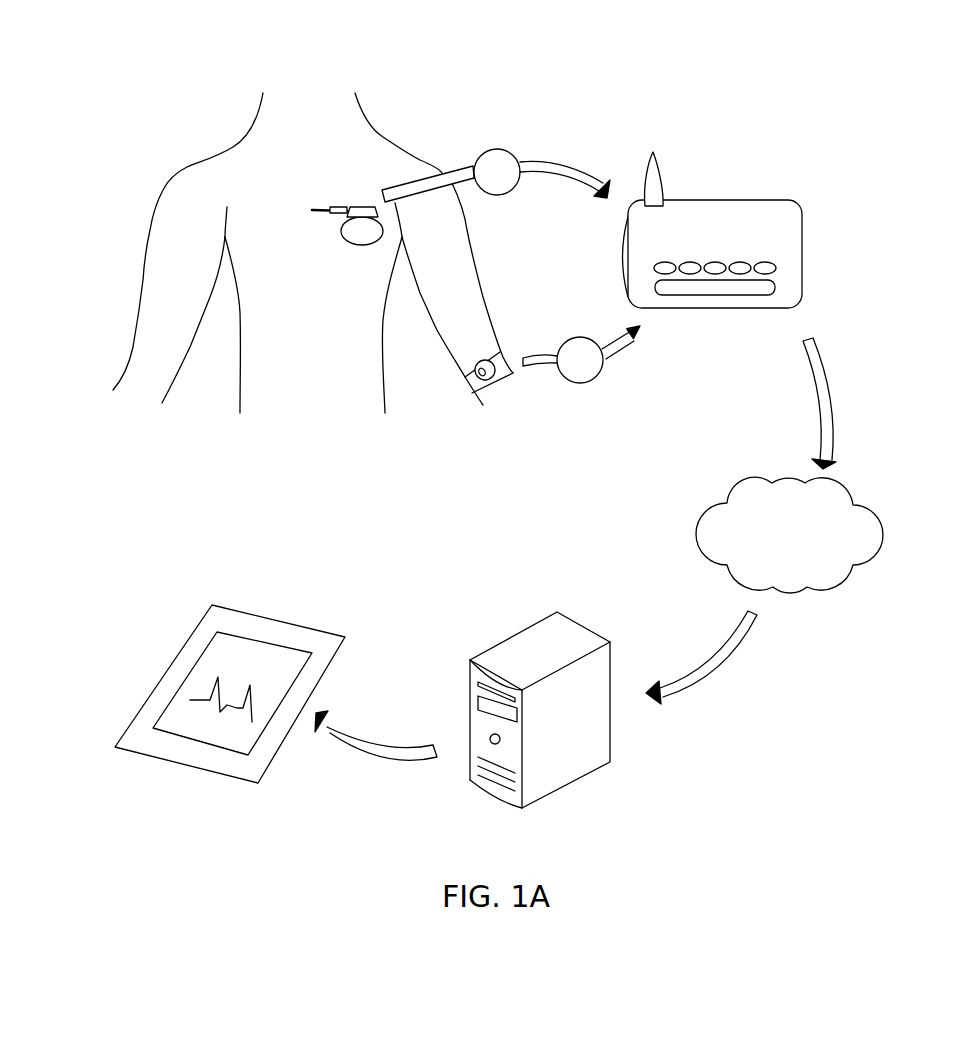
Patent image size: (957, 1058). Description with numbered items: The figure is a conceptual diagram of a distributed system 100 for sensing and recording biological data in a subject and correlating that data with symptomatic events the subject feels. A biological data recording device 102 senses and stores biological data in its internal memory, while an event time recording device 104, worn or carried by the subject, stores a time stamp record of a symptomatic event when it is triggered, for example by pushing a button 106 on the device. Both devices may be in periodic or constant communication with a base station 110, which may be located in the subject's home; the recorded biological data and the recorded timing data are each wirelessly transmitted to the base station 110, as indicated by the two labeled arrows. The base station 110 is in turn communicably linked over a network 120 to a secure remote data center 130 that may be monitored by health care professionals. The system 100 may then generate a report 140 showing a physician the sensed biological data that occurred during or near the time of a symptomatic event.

The distributed system 100 is at (766, 124).
The biological data recording device 102 is at (343, 241).
The event time recording device 104 is at (502, 353).
The button 106 is at (467, 377).
The base station 110 is at (626, 218).
The network 120 is at (692, 527).
The secure remote data center 130 is at (470, 685).
The report 140 is at (183, 647).